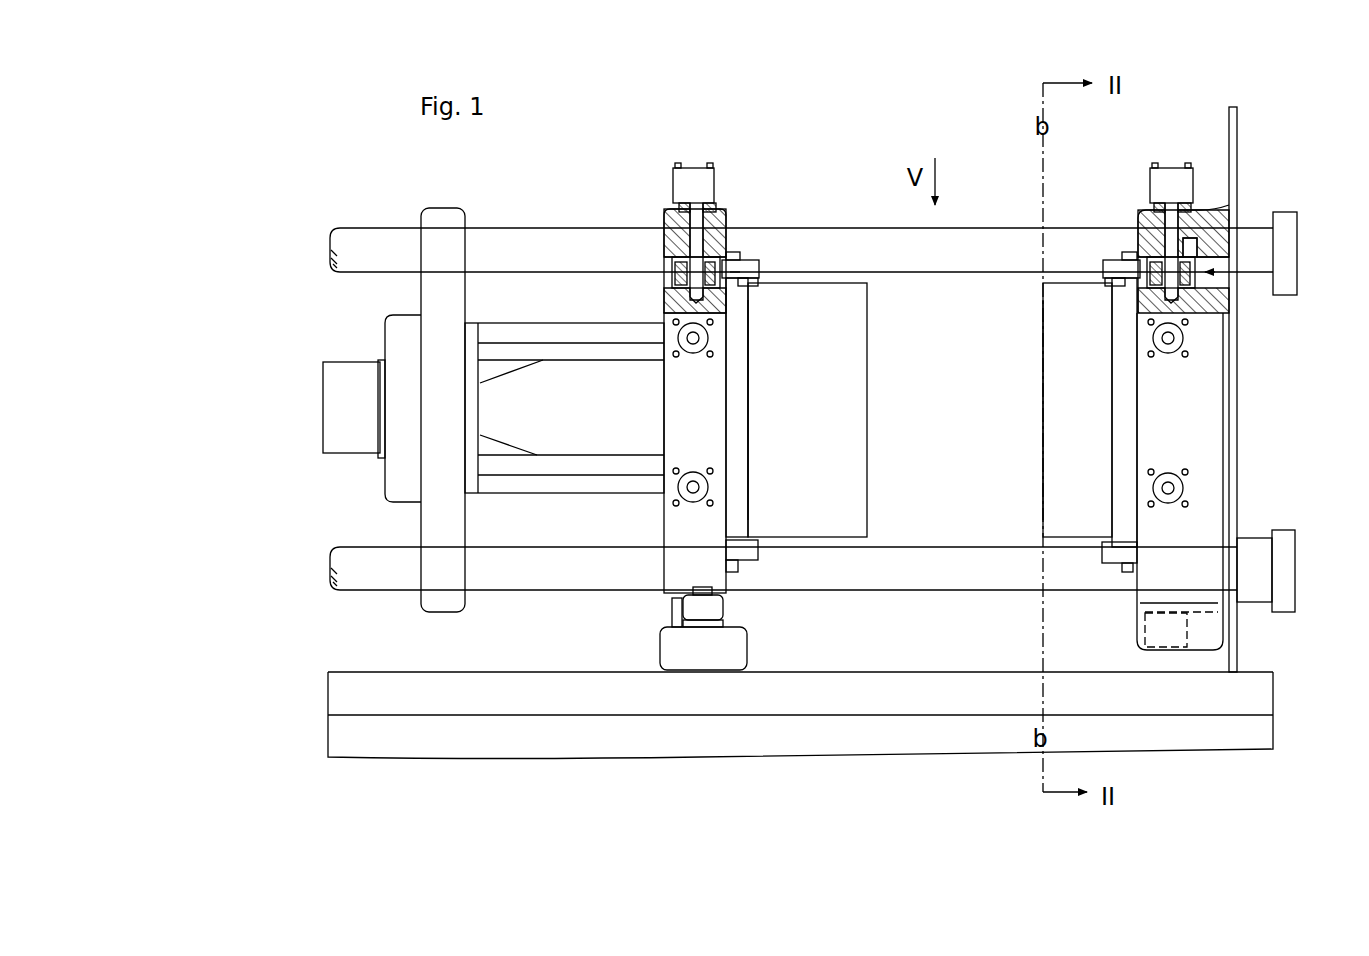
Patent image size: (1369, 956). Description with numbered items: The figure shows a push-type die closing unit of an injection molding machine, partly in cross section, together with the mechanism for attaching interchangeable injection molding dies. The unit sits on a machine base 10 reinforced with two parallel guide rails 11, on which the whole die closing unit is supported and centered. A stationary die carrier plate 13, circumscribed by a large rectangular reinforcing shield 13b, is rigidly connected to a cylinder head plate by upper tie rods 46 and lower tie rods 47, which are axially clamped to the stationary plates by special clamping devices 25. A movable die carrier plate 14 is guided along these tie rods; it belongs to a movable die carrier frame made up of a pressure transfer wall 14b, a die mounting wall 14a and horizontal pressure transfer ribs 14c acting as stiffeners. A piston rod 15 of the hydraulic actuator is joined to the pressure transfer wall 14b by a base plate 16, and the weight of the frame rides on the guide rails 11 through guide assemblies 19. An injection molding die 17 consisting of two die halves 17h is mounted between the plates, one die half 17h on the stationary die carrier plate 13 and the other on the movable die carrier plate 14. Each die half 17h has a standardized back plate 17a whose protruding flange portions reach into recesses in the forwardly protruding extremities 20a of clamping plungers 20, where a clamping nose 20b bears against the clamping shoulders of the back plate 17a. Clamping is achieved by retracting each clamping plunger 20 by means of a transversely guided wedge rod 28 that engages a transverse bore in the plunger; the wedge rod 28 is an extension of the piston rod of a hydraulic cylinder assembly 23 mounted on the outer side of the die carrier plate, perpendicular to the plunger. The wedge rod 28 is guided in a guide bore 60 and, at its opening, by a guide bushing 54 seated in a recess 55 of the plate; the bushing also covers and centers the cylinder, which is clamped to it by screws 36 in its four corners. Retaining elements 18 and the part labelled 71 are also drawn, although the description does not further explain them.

The machine base 10 is at (345, 737).
The guide rails 11 is at (345, 692).
The stationary die carrier plate 13 is at (1141, 210).
The reinforcing shield 13b is at (1237, 127).
The movable die carrier plate 14 is at (727, 214).
The die mounting wall 14a is at (690, 414).
The pressure transfer wall 14b is at (440, 520).
The pressure transfer ribs 14c is at (545, 350).
The piston rod 15 is at (345, 382).
The base plate 16 is at (397, 472).
The injection molding die 17 is at (1041, 397).
The back plates 17a is at (740, 410).
The die halves 17h is at (1050, 450).
The clamping brackets 18 is at (736, 254).
The guide assemblies 19 is at (680, 645).
The clamping plunger 20 is at (662, 283).
The forwardly protruding extremities 20a is at (740, 268).
The clamping nose 20b is at (752, 287).
The hydraulic cylinder assembly 23 is at (693, 185).
The clamping devices 25 is at (1297, 267).
The wedge rod 28 is at (688, 240).
The screws 36 is at (712, 204).
The upper tie rods 46 is at (968, 240).
The lower tie rods 47 is at (958, 572).
The guide bushing 54 is at (670, 212).
The recess 55 is at (1168, 470).
The guide bore 60 is at (690, 340).
The locking insert 71 is at (1205, 248).